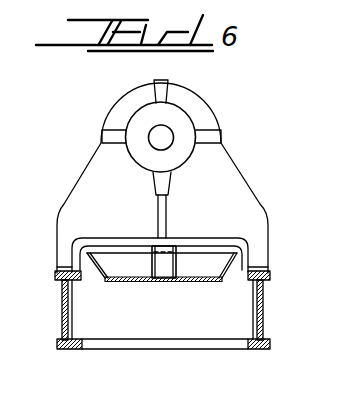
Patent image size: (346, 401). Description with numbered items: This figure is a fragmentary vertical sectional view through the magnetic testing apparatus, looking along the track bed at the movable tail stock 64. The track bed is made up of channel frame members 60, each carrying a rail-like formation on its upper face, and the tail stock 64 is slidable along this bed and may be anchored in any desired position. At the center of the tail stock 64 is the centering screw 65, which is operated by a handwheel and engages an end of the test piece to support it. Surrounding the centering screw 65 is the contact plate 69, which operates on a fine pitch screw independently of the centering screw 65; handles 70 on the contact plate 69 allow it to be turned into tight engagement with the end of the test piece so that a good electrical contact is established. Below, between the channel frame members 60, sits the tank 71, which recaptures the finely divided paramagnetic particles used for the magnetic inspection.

The channel frame members 60 is at (62, 313).
The tail stock 64 is at (247, 201).
The centering screw 65 is at (161, 138).
The contact plate 69 is at (176, 120).
The handles 70 is at (218, 131).
The tank 71 is at (206, 263).